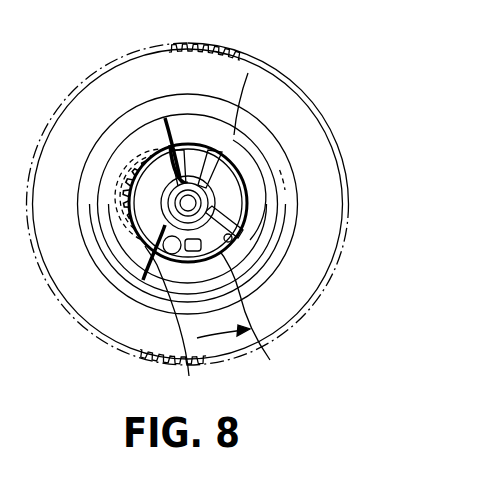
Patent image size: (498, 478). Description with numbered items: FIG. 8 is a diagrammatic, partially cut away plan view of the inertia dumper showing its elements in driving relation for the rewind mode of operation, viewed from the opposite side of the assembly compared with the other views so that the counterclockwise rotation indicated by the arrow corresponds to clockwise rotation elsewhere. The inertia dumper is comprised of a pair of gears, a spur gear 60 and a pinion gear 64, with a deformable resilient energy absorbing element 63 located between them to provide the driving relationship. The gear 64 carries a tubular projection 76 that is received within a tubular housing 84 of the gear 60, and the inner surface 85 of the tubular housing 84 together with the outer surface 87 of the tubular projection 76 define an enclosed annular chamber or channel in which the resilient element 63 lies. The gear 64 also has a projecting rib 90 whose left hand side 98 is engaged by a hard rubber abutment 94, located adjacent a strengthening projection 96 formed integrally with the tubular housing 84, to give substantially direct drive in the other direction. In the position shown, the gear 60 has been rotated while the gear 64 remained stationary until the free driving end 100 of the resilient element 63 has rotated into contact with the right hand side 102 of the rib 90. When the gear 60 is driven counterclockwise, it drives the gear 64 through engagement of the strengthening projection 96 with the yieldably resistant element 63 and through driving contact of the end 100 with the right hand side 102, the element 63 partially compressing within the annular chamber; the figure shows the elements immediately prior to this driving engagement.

The gear 60 is at (304, 288).
The deformable resilient energy absorbing element 63 is at (256, 134).
The gear 64 is at (150, 226).
The tubular projection 76 is at (255, 193).
The tubular housing 84 is at (242, 234).
The inner surface 85 is at (238, 262).
The outer surface 87 is at (240, 178).
The projecting rib 90 is at (187, 140).
The hard rubber abutment 94 is at (173, 321).
The strengthening projection 96 is at (242, 310).
The left hand side 98 is at (165, 118).
The free driving end 100 is at (216, 145).
The right hand side 102 is at (248, 73).